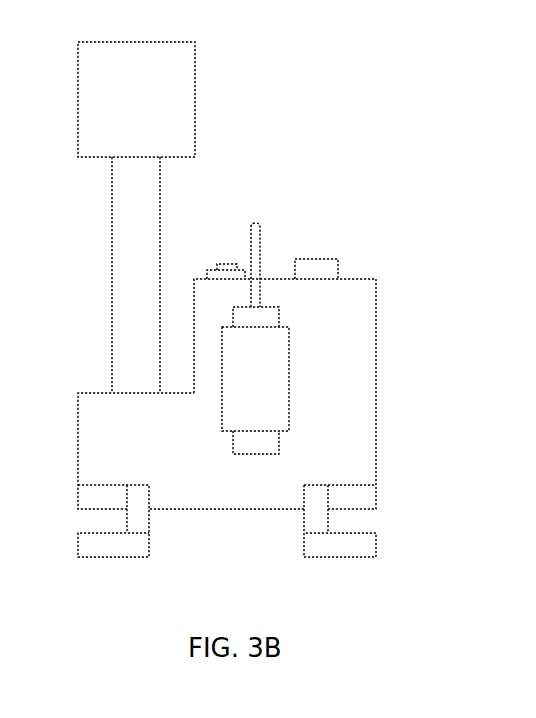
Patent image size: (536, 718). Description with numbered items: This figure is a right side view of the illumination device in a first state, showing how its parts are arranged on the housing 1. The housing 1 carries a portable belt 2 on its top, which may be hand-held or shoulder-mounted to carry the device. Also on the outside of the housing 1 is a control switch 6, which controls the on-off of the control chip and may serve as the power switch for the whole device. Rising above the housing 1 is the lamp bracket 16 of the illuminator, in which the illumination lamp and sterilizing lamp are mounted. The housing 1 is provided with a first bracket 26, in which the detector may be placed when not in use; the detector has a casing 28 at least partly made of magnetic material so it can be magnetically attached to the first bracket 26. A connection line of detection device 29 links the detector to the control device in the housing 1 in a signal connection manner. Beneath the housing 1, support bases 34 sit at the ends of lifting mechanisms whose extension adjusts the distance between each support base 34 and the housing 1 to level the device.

The housing 1 is at (353, 378).
The portable belt 2 is at (227, 262).
The control switch 6 is at (320, 268).
The lamp bracket 16 is at (160, 97).
The first bracket 26 is at (270, 353).
The casing 28 is at (260, 443).
The connection line of detection device 29 is at (257, 242).
The support base 34 is at (340, 550).